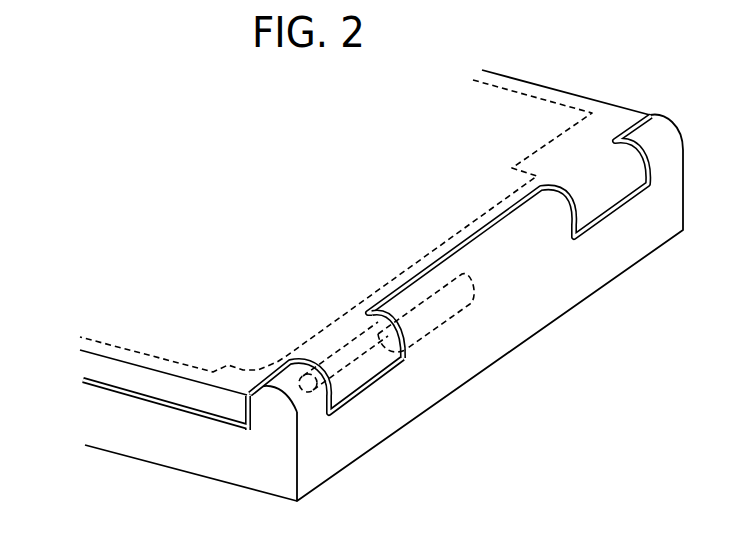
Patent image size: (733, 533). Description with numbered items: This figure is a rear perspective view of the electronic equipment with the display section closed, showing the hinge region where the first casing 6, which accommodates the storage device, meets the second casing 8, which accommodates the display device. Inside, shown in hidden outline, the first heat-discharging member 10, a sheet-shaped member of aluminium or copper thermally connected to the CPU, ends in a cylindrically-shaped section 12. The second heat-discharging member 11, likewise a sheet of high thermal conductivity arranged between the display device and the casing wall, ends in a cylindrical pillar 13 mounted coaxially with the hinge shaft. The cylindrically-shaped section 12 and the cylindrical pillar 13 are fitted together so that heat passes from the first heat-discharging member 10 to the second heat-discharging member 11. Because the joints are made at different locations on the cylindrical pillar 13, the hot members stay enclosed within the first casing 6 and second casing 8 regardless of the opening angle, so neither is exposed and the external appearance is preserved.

The first casing 6 is at (245, 473).
The second casing 8 is at (122, 382).
The first heat-discharging member 10 is at (437, 333).
The second heat-discharging member 11 is at (97, 357).
The cylindrically-shaped section 12 is at (463, 291).
The cylindrical pillar 13 is at (345, 350).